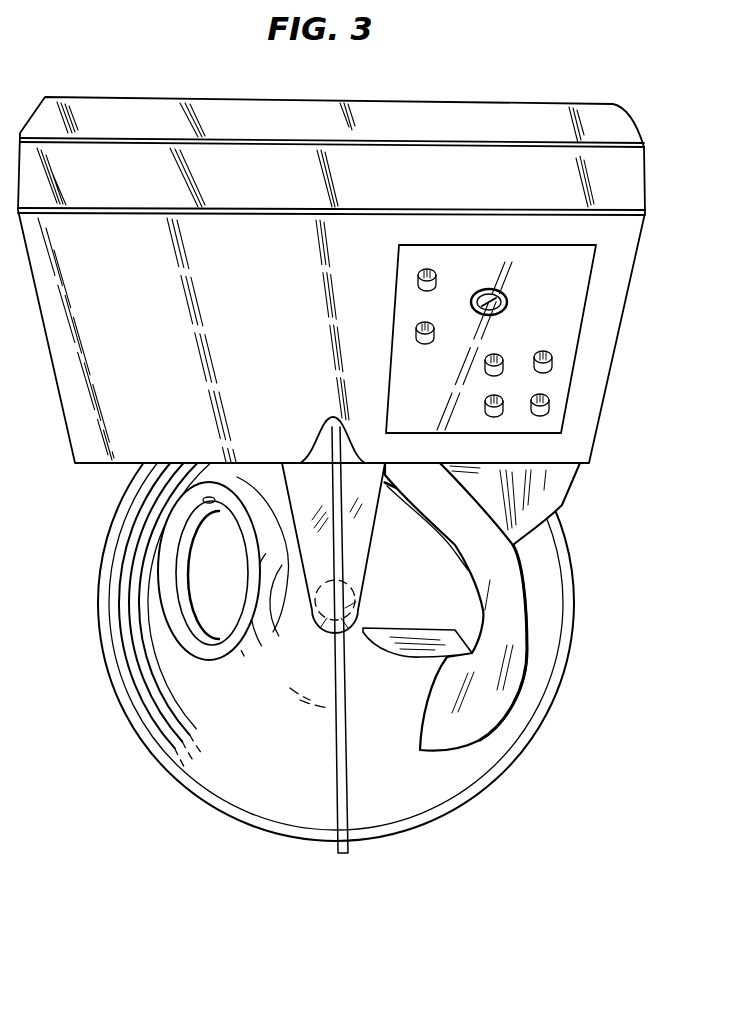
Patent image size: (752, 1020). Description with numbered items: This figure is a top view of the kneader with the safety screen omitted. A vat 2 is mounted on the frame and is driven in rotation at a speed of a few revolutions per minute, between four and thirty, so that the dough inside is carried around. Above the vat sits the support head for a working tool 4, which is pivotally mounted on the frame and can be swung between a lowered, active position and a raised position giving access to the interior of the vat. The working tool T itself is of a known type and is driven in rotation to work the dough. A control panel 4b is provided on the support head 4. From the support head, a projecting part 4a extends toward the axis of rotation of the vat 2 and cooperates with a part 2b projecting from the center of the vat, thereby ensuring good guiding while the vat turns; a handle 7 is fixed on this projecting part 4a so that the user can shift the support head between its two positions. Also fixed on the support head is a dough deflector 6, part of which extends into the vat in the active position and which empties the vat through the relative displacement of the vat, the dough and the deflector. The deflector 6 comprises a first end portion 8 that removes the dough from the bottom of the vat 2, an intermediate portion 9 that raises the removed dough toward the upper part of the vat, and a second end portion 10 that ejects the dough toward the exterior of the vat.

The vat 2 is at (569, 666).
The projecting part of the vat 2b is at (330, 588).
The support head for a working tool 4 is at (648, 144).
The projecting part of the support head 4a is at (283, 520).
The control panel 4b is at (561, 358).
The dough deflector 6 is at (523, 696).
The handle 7 is at (354, 850).
The first end portion of the deflector 8 is at (403, 631).
The intermediate portion of the deflector 9 is at (529, 628).
The second end portion of the deflector 10 is at (561, 510).
The working tool T is at (154, 546).